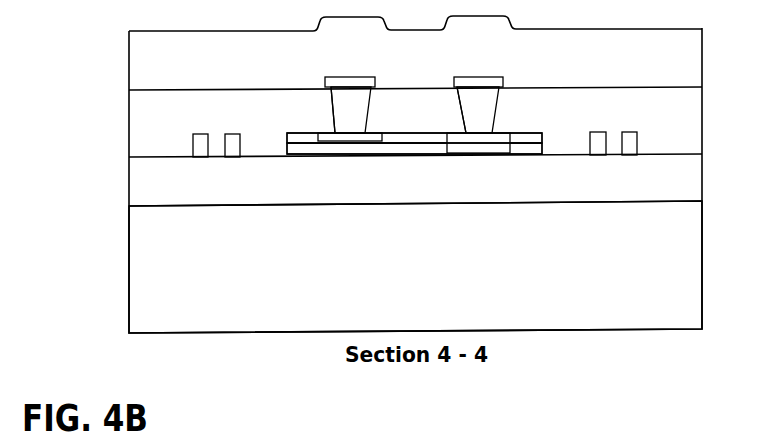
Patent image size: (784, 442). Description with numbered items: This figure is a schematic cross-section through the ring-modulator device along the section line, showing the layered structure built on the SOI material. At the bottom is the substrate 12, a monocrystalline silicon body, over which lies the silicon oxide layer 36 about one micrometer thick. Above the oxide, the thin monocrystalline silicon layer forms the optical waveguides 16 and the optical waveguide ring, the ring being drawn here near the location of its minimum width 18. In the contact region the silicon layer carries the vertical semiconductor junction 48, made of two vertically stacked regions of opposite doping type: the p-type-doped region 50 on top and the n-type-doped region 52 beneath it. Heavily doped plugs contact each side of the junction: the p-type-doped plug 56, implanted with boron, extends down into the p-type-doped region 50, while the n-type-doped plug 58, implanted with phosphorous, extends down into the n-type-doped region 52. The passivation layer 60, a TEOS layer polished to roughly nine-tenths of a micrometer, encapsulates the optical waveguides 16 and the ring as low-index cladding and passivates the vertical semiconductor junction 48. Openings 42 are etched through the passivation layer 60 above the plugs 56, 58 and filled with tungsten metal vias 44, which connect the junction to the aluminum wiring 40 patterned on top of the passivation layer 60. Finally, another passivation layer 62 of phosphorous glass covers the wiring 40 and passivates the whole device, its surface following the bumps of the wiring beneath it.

The substrate 12 is at (185, 304).
The optical waveguides 16 is at (192, 143).
The minimum width 18 is at (225, 130).
The silicon oxide layer 36 is at (183, 191).
The wiring 40 is at (350, 77).
The openings 42 is at (331, 98).
The metal vias 44 is at (361, 114).
The vertical semiconductor junction 48 is at (545, 133).
The p-type-doped region 50 is at (415, 133).
The n-type-doped region 52 is at (415, 152).
The p-type-doped plug 56 is at (328, 133).
The n-type-doped plug 58 is at (503, 131).
The passivation layer 60 is at (129, 119).
The passivation layer 62 is at (183, 70).